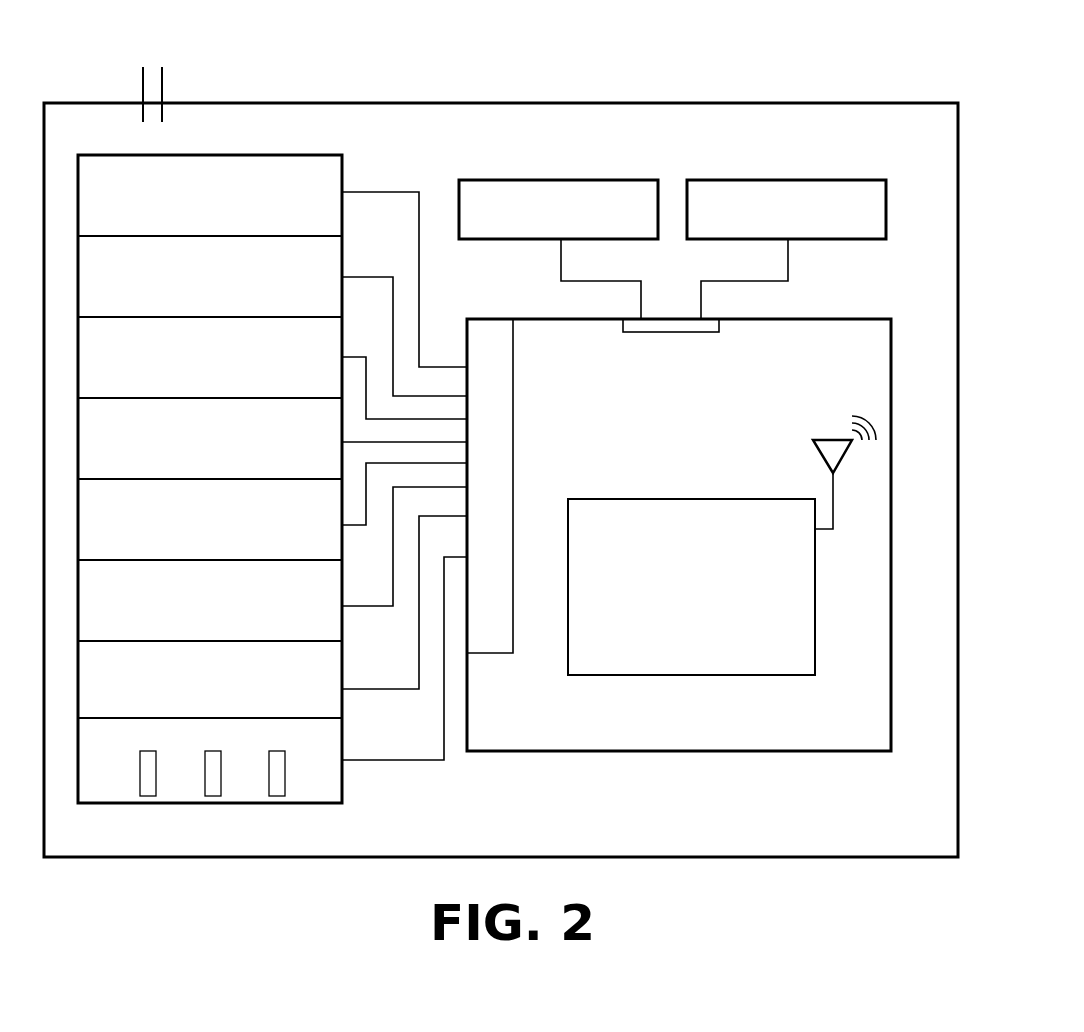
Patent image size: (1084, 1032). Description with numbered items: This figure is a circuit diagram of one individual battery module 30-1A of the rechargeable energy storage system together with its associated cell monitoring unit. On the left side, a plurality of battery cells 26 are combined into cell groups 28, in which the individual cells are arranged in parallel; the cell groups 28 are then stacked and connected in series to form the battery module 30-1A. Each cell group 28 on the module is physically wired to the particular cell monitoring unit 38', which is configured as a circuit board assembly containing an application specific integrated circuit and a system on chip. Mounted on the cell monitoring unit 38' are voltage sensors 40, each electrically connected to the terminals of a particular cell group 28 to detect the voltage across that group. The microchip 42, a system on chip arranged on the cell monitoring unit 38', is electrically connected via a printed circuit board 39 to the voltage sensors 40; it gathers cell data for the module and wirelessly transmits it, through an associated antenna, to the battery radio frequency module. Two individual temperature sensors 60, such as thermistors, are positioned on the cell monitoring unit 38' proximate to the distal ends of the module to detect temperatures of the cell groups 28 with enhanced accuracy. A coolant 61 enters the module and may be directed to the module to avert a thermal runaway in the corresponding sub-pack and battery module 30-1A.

The battery module 30-1A is at (748, 857).
The coolant 61 is at (144, 78).
The battery cells 26 is at (115, 790).
The cell groups 28 is at (199, 207).
The cell monitoring unit (CMU) 38' is at (676, 573).
The printed circuit board (PCB) 39 is at (633, 723).
The voltage sensors 40 is at (490, 332).
The microchip (system on chip) 42 is at (603, 515).
The temperature sensors 60 is at (560, 180).